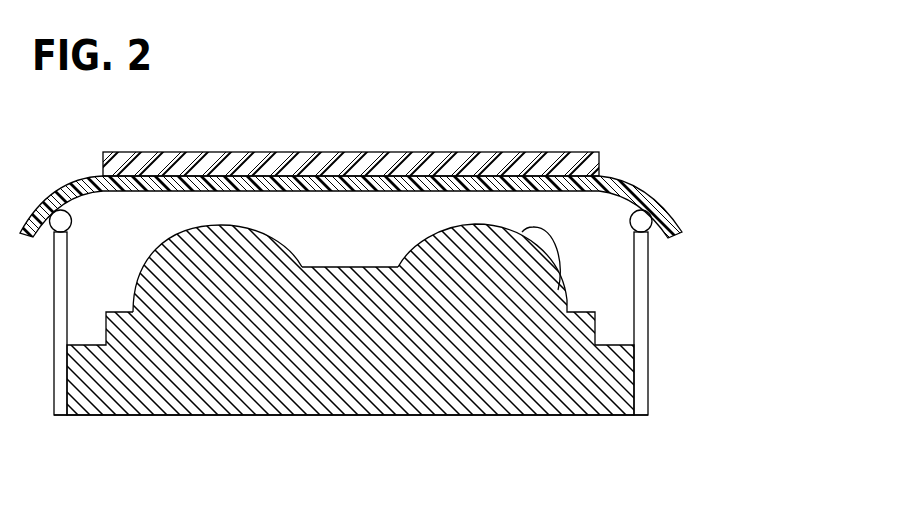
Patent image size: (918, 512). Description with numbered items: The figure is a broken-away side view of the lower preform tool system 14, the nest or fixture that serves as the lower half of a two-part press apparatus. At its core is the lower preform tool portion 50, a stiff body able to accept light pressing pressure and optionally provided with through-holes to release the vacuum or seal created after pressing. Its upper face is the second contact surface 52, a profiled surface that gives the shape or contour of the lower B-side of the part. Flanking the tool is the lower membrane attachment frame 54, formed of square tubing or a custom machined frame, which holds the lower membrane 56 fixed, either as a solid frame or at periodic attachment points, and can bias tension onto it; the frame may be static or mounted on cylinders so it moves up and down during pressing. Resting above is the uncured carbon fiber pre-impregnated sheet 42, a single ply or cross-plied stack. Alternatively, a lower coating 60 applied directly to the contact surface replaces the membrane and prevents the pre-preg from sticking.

The lower preform tool system 14 is at (606, 107).
The uncured carbon fiber pre-impregnated sheet 42 is at (590, 163).
The lower membrane 56 is at (670, 216).
The lower membrane attachment frame 54 is at (665, 320).
The lower preform tool portion 50 is at (350, 419).
The lower coating 60 is at (502, 224).
The second contact surface 52 is at (558, 290).